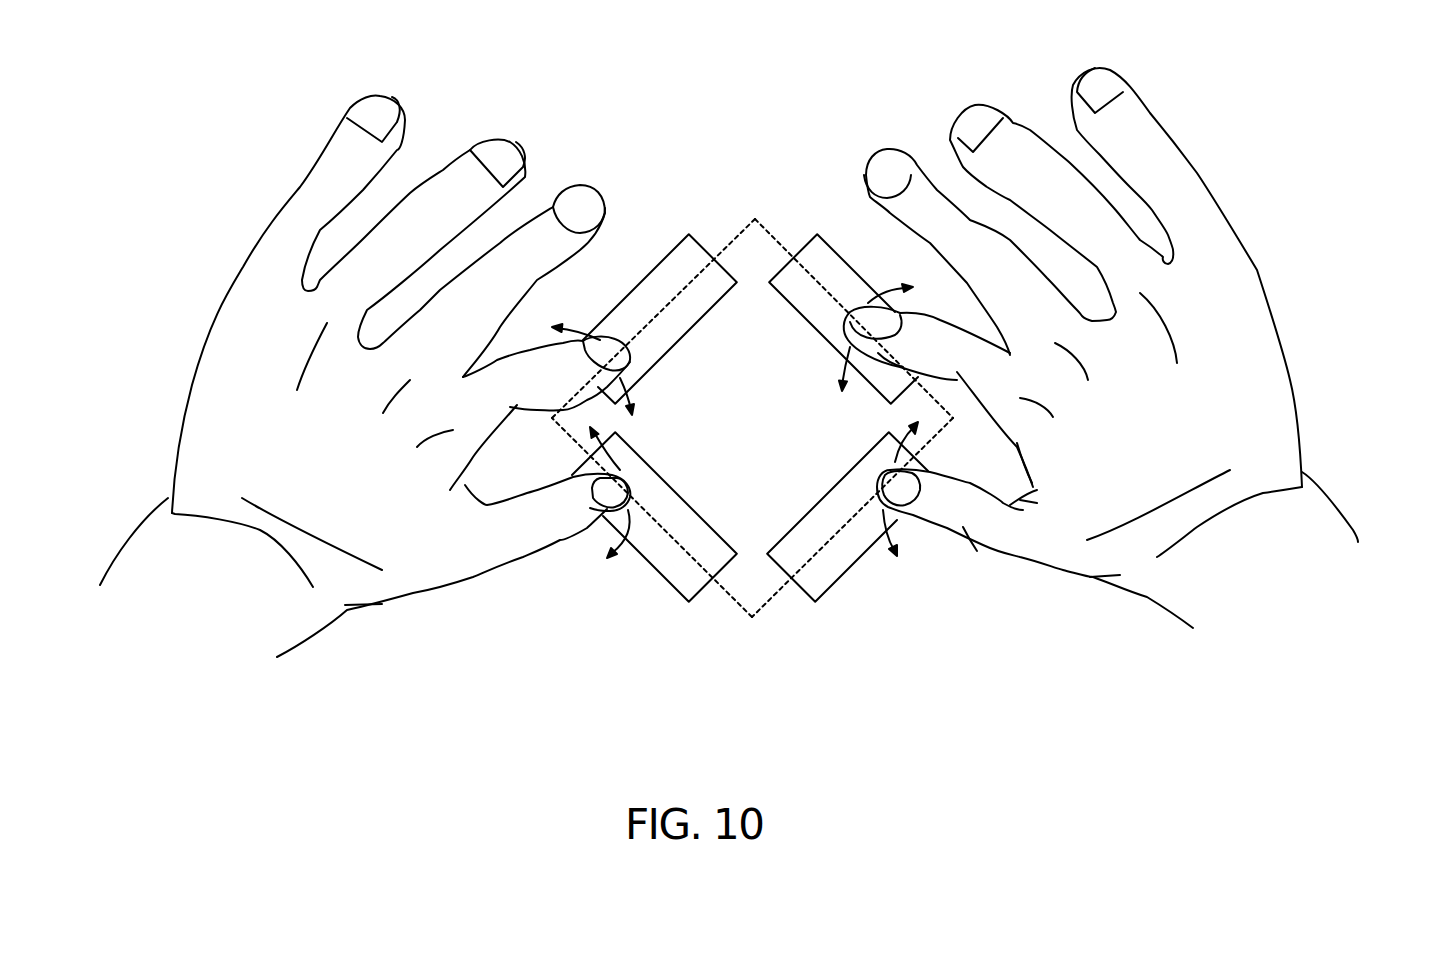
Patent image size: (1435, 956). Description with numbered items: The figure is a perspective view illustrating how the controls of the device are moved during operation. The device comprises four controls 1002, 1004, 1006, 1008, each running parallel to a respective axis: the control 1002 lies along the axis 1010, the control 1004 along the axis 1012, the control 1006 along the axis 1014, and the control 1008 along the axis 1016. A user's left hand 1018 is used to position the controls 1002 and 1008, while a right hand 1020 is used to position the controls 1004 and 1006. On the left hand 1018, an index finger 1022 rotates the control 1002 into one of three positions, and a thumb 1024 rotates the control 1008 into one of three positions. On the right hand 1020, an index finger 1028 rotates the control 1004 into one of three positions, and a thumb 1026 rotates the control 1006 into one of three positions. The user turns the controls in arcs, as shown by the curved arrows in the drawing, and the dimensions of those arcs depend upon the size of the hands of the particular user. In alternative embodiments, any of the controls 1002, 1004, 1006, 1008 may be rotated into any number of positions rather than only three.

The control 1002 is at (686, 277).
The control 1004 is at (826, 282).
The control 1006 is at (822, 572).
The control 1008 is at (683, 582).
The axis 1010 is at (742, 230).
The axis 1012 is at (771, 238).
The axis 1014 is at (770, 597).
The axis 1016 is at (727, 597).
The left hand 1018 is at (262, 385).
The right hand 1020 is at (1247, 458).
The index finger 1022 is at (523, 363).
The thumb 1024 is at (557, 505).
The thumb 1026 is at (965, 525).
The index finger 1028 is at (930, 330).